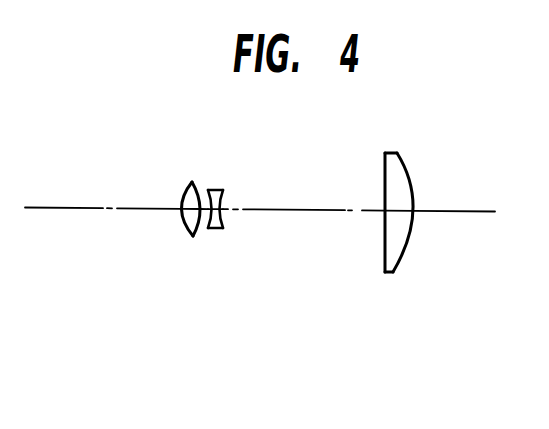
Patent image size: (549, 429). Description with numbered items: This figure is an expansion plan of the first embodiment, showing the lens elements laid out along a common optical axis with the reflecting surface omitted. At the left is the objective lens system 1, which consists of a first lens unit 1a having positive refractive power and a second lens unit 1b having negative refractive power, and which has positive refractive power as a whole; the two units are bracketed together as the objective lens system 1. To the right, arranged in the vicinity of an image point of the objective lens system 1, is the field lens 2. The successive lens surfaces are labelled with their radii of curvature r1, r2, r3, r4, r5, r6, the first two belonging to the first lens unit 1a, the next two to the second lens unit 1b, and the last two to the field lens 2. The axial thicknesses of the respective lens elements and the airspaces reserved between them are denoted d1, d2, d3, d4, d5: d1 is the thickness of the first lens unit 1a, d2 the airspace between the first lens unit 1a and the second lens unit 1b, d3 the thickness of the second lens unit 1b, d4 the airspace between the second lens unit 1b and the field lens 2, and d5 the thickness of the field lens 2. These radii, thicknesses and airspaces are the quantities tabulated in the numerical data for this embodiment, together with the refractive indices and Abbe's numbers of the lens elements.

The objective lens system 1 is at (205, 243).
The first lens unit 1a is at (178, 229).
The second lens unit 1b is at (237, 236).
The field lens 2 is at (405, 217).
The radius of curvature r1 is at (190, 191).
The radius of curvature r2 is at (200, 185).
The radius of curvature r3 is at (210, 190).
The radius of curvature r4 is at (222, 190).
The radius of curvature r5 is at (385, 173).
The radius of curvature r6 is at (400, 164).
The lens thickness d1 is at (183, 230).
The airspace d2 is at (204, 232).
The lens thickness d3 is at (222, 228).
The airspace d4 is at (308, 212).
The lens thickness d5 is at (397, 211).